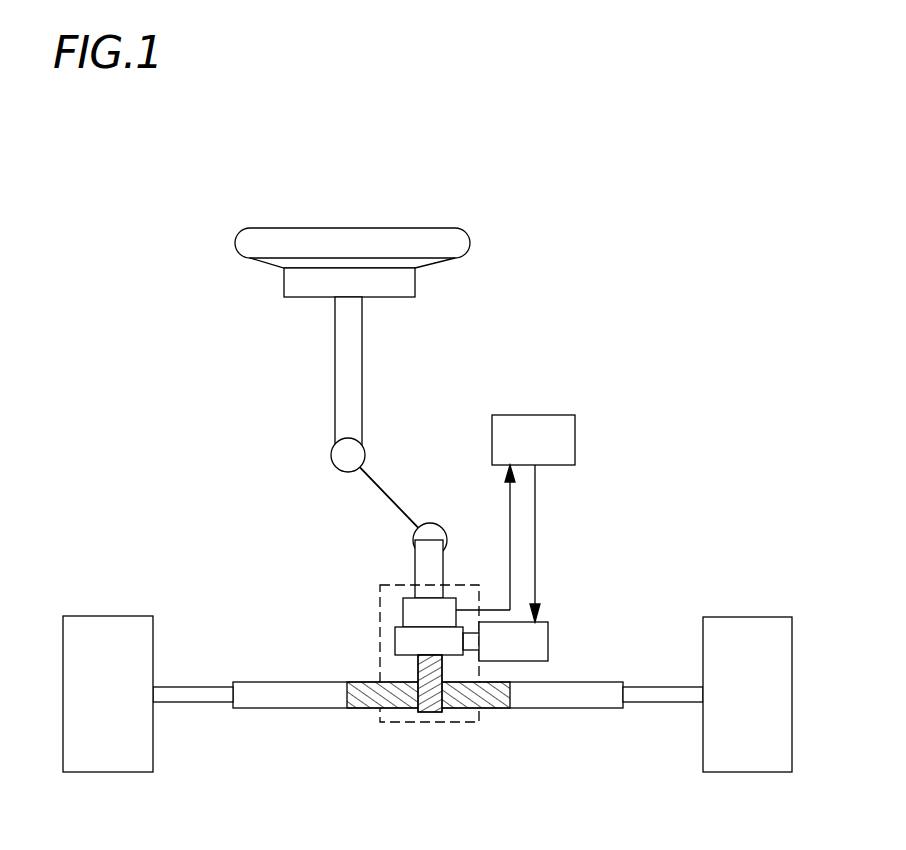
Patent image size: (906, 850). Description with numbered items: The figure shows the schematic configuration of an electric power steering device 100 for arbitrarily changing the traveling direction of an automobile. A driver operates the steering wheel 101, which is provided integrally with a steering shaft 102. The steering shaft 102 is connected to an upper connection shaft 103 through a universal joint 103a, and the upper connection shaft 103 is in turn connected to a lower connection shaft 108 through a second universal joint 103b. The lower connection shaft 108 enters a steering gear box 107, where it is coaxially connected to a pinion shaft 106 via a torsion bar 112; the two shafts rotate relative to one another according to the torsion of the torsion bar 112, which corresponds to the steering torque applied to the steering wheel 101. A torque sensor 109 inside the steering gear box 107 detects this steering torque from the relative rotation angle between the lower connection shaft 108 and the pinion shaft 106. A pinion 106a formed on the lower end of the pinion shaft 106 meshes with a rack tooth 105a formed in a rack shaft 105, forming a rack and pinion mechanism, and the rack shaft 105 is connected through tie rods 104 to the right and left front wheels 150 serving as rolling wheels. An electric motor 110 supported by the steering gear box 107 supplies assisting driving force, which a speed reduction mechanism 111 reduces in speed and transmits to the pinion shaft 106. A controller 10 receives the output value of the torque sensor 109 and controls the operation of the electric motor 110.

The electric power steering device 100 is at (117, 343).
The steering wheel 101 is at (259, 228).
The steering shaft 102 is at (362, 379).
The upper connection shaft 103 is at (346, 494).
The universal joint 103a is at (330, 460).
The universal joint 103b is at (414, 524).
The lower connection shaft 108 is at (415, 565).
The steering gear box 107 is at (380, 593).
The torsion bar 112 is at (420, 614).
The speed reduction mechanism 111 is at (395, 640).
The torque sensor 109 is at (452, 598).
The electric motor 110 is at (550, 633).
The controller 10 is at (575, 440).
The rack shaft 105 is at (428, 736).
The rack tooth 105a is at (494, 710).
The pinion shaft 106 is at (418, 665).
The pinion 106a is at (428, 712).
The tie rod 104 is at (195, 686).
The front wheel 150 is at (110, 616).